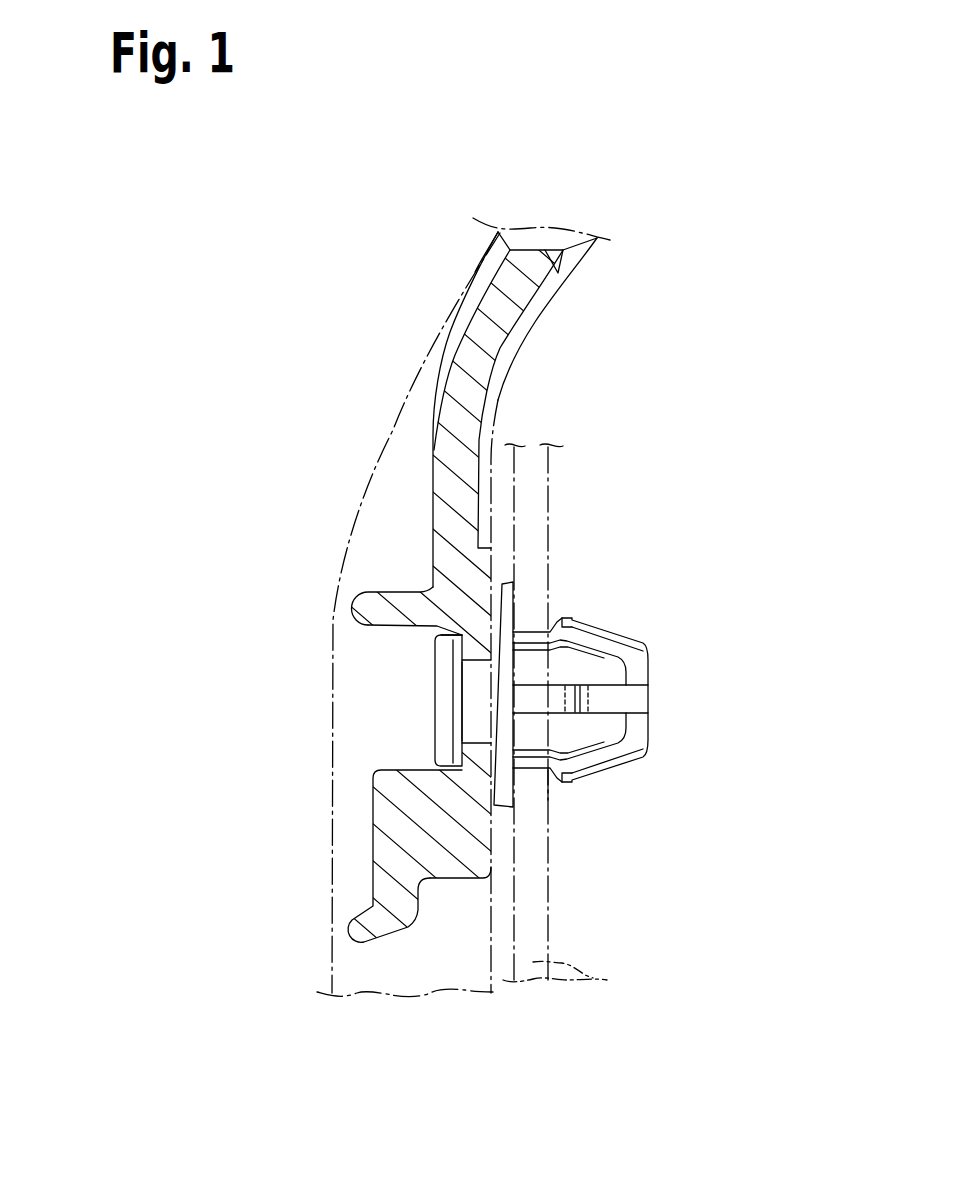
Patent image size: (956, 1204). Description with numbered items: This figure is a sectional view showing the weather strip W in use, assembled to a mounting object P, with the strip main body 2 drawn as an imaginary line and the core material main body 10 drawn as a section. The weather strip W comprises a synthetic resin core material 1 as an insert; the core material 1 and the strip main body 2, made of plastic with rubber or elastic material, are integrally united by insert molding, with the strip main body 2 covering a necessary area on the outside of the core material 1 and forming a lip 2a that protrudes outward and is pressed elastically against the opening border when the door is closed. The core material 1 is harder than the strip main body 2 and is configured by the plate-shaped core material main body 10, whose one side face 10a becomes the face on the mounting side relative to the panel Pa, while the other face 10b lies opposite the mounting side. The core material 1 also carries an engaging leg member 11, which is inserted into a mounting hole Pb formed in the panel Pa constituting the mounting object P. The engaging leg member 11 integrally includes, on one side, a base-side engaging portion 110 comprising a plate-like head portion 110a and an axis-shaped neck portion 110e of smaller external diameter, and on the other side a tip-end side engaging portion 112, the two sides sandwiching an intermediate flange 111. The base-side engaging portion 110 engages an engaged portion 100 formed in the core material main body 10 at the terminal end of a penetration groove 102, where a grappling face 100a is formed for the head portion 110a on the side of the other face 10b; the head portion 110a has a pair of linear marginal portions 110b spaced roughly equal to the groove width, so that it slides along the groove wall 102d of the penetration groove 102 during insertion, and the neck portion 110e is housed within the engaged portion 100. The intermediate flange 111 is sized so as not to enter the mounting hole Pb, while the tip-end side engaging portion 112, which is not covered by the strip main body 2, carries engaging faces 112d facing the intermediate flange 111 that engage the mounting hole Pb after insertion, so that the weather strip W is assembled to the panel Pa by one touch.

The core material 1 is at (464, 606).
The strip main body 2 is at (433, 330).
The lip 2a is at (506, 232).
The weather strip W is at (492, 552).
The core material main body 10 is at (464, 606).
The one side face 10a is at (500, 392).
The other face 10b is at (447, 368).
The engaged portion 100 is at (490, 580).
The grappling face 100a is at (447, 634).
The penetration groove 102 is at (395, 746).
The groove wall 102d is at (413, 587).
The engaging leg member 11 is at (464, 654).
The base-side engaging portion 110 is at (392, 624).
The head portion 110a is at (437, 705).
The linear marginal portion 110b is at (474, 634).
The neck portion 110e is at (470, 677).
The intermediate flange 111 is at (514, 615).
The tip-end side engaging portion 112 is at (645, 706).
The engaging face 112d is at (572, 618).
The mounting object P is at (579, 719).
The panel Pa is at (579, 976).
The mounting hole Pb is at (552, 792).